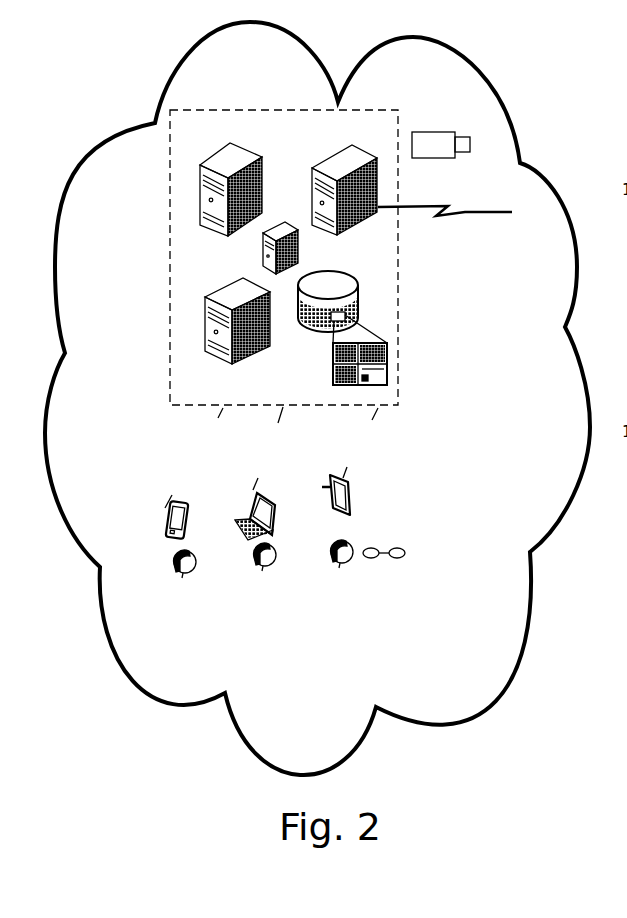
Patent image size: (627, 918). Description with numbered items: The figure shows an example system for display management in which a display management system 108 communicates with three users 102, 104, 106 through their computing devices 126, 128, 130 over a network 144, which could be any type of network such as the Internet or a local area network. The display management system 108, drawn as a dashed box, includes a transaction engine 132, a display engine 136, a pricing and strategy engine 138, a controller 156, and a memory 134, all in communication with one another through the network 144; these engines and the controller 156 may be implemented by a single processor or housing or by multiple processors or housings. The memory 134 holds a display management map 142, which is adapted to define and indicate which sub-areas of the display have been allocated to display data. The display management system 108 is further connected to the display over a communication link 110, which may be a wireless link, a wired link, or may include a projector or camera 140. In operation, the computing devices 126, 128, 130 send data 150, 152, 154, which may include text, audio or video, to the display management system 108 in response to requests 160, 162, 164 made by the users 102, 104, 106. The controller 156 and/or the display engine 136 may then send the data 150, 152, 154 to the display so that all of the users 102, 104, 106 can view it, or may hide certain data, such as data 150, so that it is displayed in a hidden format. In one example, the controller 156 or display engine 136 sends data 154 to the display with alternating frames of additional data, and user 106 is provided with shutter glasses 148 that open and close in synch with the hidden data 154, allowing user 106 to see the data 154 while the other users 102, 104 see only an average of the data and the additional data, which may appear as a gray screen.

The user 102 is at (193, 582).
The user 104 is at (273, 573).
The user 106 is at (348, 570).
The display management system 108 is at (235, 97).
The communication link 110 is at (430, 203).
The computing device 126 is at (165, 523).
The computing device 128 is at (242, 527).
The computing device 130 is at (332, 513).
The transaction engine 132 is at (206, 321).
The memory 134 is at (315, 330).
The display engine 136 is at (317, 177).
The pricing and strategy engine 138 is at (204, 180).
The projector or camera 140 is at (420, 128).
The display management map 142 is at (333, 322).
The network 144 is at (520, 617).
The shutter glasses 148 is at (391, 559).
The data 150 is at (463, 238).
The data 152 is at (288, 445).
The data 154 is at (380, 448).
The controller 156 is at (260, 256).
The request 160 is at (180, 470).
The request 162 is at (247, 460).
The request 164 is at (337, 450).